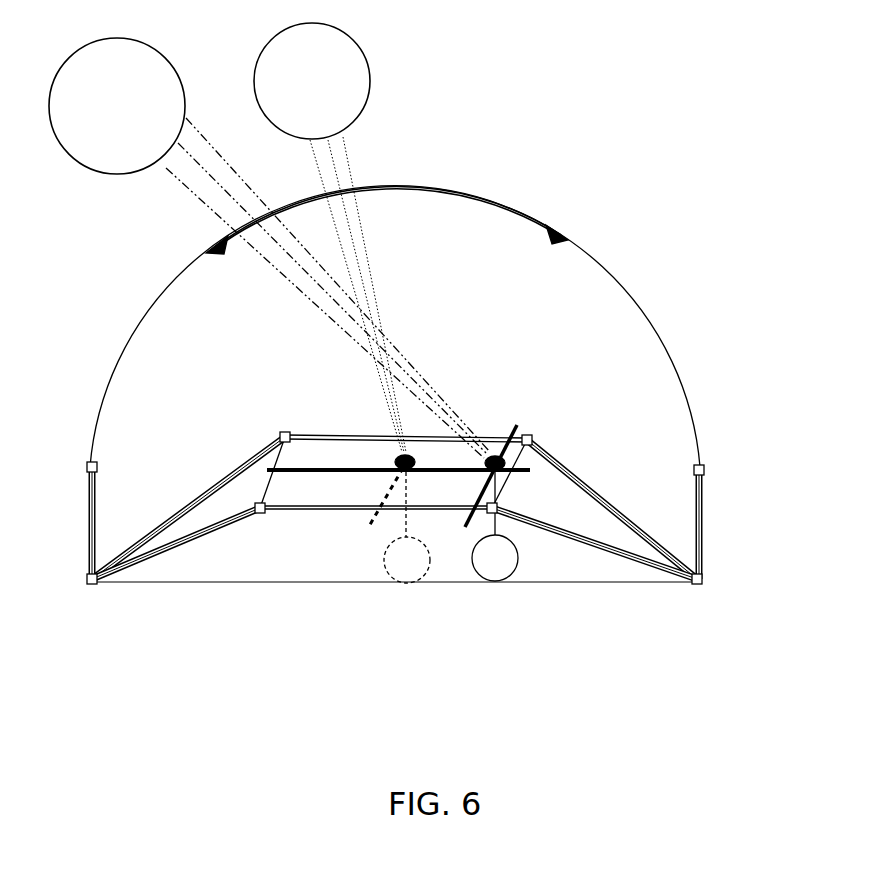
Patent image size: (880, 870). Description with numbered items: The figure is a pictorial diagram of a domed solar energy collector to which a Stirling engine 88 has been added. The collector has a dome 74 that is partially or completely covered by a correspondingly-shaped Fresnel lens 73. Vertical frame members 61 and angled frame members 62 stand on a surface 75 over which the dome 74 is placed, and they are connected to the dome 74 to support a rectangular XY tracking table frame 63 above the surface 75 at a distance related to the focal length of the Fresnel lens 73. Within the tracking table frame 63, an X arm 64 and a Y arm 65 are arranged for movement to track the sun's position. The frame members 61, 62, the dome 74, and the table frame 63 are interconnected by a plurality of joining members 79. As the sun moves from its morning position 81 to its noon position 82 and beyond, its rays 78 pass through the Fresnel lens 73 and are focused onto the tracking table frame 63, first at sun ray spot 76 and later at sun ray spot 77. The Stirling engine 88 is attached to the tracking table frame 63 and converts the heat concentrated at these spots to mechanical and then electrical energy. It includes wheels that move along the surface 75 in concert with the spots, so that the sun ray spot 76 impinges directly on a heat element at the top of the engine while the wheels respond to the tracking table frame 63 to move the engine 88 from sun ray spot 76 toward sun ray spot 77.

The vertical frame member 61 is at (86, 535).
The angled frame member 62 is at (205, 483).
The XY tracking table frame 63 is at (300, 508).
The X arm 64 is at (350, 472).
The Y arm 65 is at (460, 527).
The Fresnel lens 73 is at (520, 214).
The dome 74 is at (165, 306).
The surface 75 is at (177, 583).
The sun ray spot 76 is at (500, 445).
The sun ray spot 77 is at (413, 447).
The sun rays 78 is at (303, 275).
The joining member 79 is at (88, 462).
The morning position 81 is at (180, 77).
The noon position 82 is at (366, 53).
The Stirling engine 88 is at (395, 572).